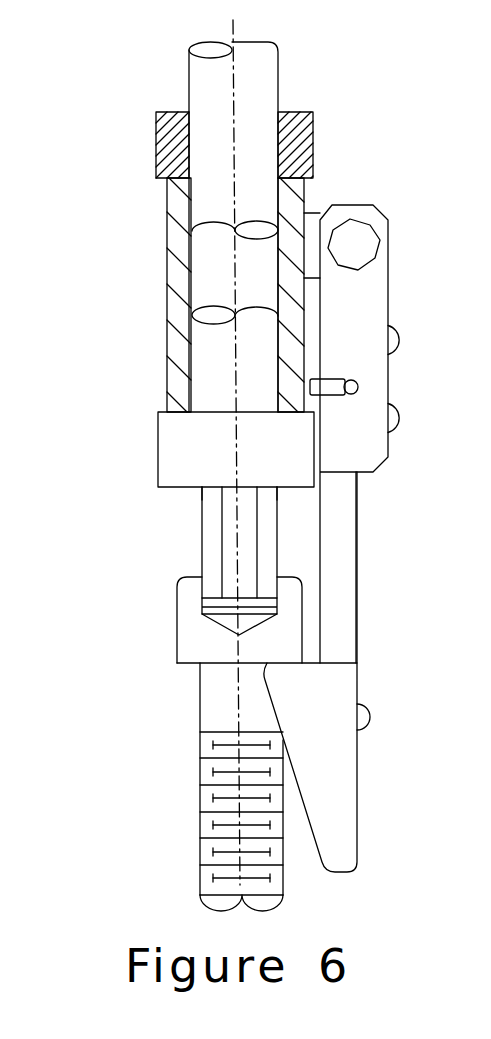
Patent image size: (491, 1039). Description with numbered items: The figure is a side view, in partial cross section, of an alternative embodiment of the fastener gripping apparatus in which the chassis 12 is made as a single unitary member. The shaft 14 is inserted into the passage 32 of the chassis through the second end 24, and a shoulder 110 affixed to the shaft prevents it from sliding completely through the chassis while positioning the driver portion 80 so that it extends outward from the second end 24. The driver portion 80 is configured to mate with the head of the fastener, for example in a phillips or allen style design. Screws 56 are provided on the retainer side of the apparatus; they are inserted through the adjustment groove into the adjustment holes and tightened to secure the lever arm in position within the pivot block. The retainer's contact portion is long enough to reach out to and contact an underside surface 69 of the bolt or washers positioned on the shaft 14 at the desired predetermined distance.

The shaft 14 is at (278, 75).
The chassis 12 is at (131, 160).
The passage 32 is at (222, 275).
The screws 56 is at (398, 333).
The second end 24 is at (132, 436).
The shoulder 110 is at (180, 490).
The driver portion 80 is at (207, 552).
The underside surface 69 is at (192, 665).